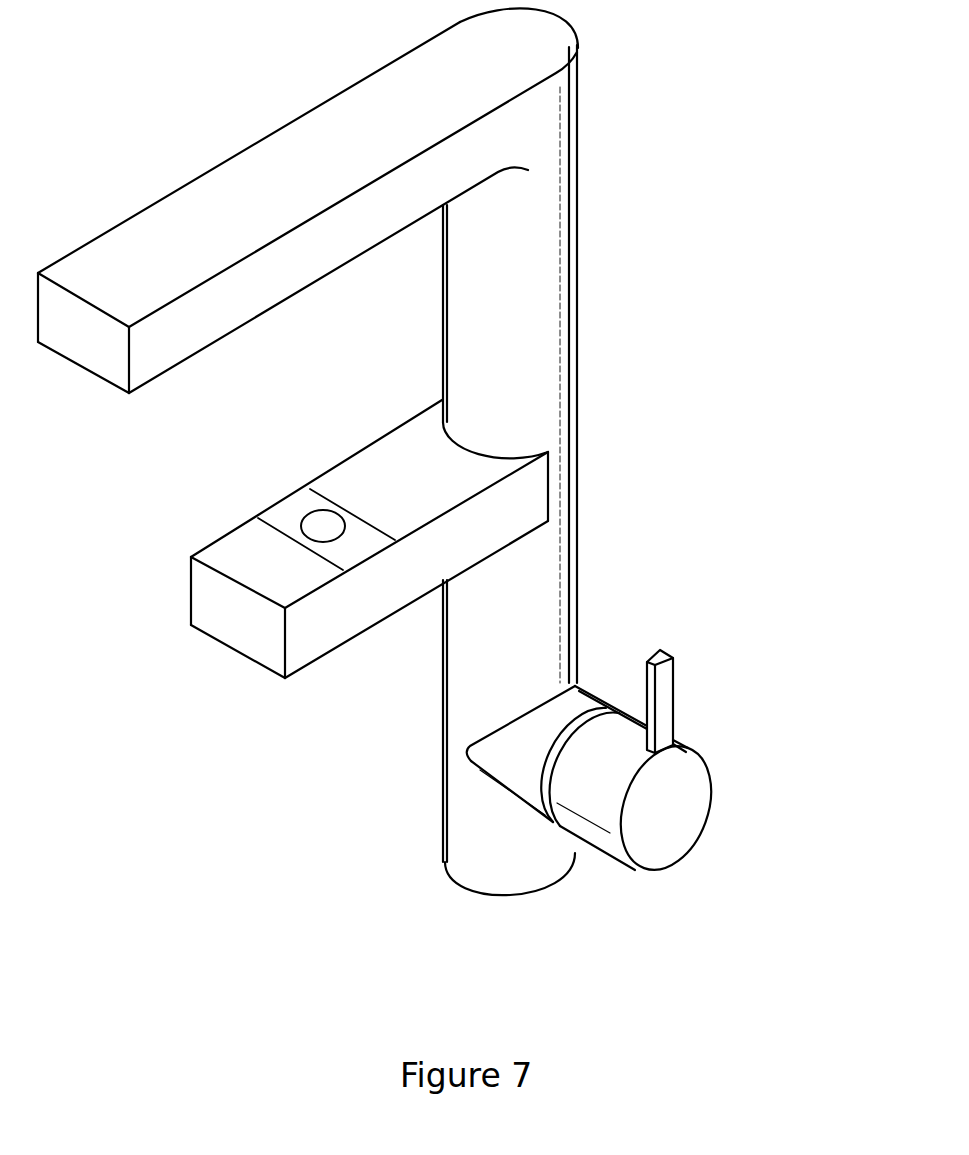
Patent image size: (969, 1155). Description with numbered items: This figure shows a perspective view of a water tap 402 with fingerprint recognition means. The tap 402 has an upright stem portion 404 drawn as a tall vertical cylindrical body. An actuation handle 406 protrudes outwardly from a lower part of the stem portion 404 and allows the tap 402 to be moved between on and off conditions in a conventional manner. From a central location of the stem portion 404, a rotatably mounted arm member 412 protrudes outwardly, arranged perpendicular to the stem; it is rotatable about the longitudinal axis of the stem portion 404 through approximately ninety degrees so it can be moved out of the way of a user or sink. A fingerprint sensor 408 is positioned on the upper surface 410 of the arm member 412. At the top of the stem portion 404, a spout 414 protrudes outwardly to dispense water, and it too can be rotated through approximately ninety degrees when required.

The tap 402 is at (712, 329).
The stem portion 404 is at (552, 597).
The actuation handle 406 is at (735, 766).
The fingerprint sensor 408 is at (308, 522).
The upper surface 410 is at (298, 581).
The arm member 412 is at (369, 588).
The spout 414 is at (200, 150).